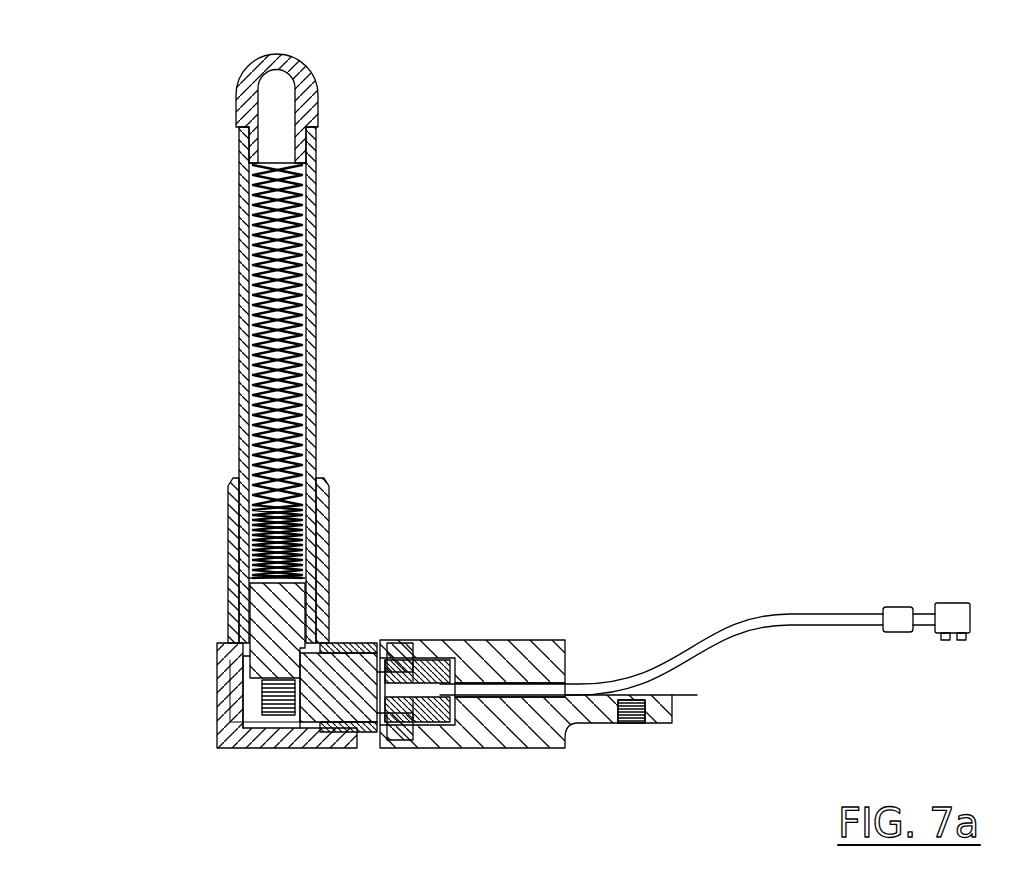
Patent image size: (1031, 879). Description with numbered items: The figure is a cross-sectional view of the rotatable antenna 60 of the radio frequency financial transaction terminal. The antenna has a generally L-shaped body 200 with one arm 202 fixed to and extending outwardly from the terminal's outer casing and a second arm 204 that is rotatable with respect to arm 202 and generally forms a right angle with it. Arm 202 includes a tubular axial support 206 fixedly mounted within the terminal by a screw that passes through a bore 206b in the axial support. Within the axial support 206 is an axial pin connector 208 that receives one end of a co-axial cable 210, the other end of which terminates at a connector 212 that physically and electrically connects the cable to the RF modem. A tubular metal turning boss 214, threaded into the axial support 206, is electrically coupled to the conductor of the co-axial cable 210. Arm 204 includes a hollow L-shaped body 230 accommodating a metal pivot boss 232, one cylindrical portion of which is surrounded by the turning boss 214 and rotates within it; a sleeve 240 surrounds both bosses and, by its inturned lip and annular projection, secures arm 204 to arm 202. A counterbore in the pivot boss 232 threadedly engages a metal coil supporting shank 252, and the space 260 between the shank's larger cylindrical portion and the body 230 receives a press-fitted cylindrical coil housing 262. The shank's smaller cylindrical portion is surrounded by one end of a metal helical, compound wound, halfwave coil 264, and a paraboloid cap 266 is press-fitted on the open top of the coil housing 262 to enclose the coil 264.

The antenna 60 is at (686, 206).
The L-shaped body 200 is at (118, 612).
The arm 202 is at (522, 600).
The second arm 204 is at (399, 414).
The tubular axial support 206 is at (530, 738).
The bore 206b is at (653, 718).
The axial pin connector 208 is at (520, 668).
The co-axial cable 210 is at (787, 626).
The connector 212 is at (950, 603).
The tubular metal turning boss 214 is at (432, 718).
The hollow L-shaped body 230 is at (330, 590).
The metal pivot boss 232 is at (307, 705).
The sleeve 240 is at (372, 645).
The metal coil supporting shank 252 is at (262, 634).
The space 260 is at (313, 553).
The cylindrical coil housing 262 is at (318, 290).
The helical compound wound halfwave coil 264 is at (300, 192).
The paraboloid cap 266 is at (300, 76).